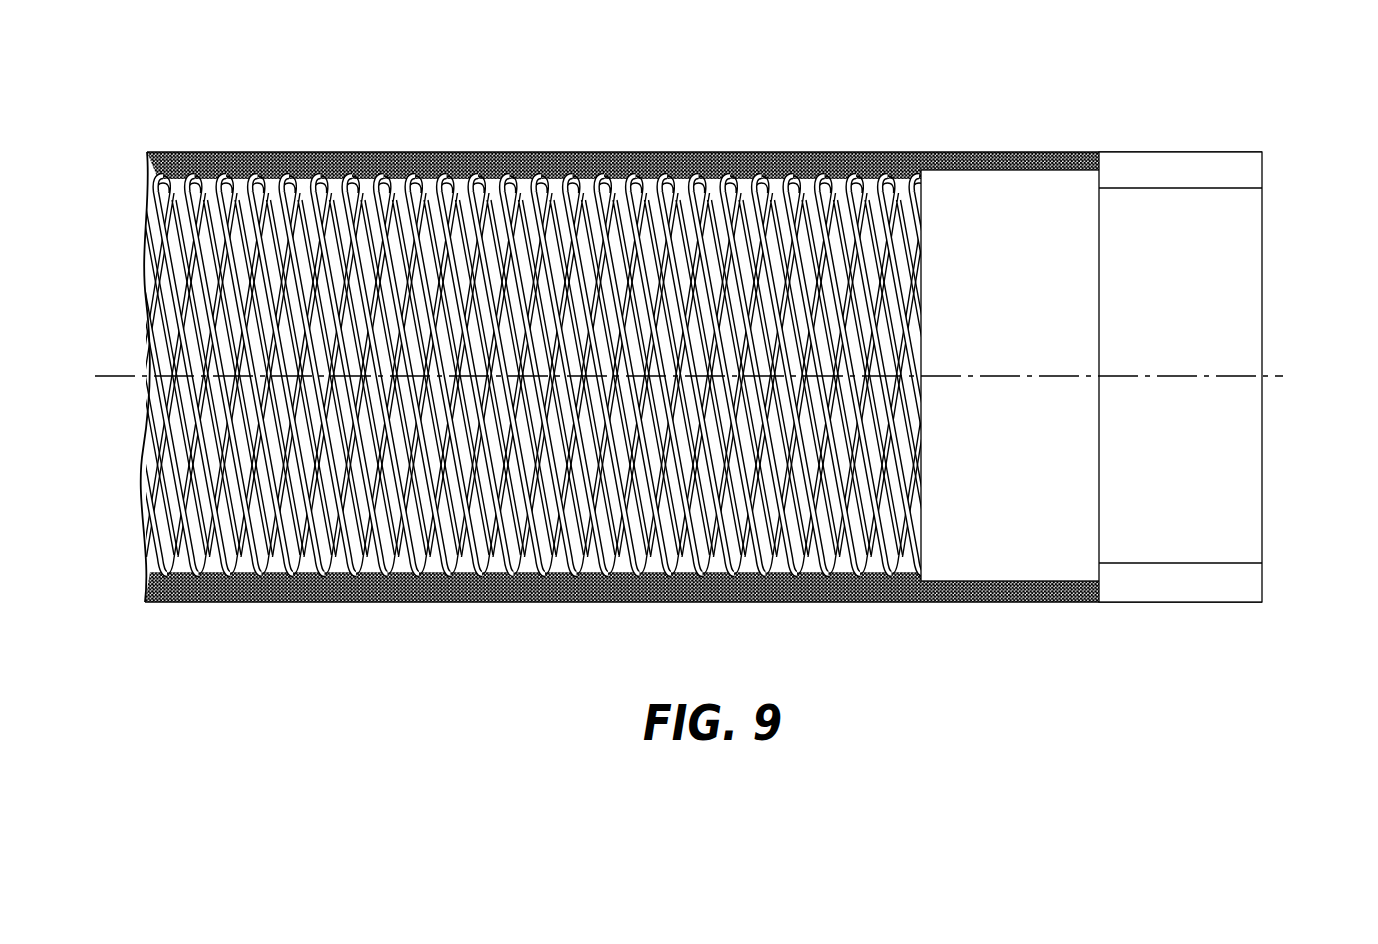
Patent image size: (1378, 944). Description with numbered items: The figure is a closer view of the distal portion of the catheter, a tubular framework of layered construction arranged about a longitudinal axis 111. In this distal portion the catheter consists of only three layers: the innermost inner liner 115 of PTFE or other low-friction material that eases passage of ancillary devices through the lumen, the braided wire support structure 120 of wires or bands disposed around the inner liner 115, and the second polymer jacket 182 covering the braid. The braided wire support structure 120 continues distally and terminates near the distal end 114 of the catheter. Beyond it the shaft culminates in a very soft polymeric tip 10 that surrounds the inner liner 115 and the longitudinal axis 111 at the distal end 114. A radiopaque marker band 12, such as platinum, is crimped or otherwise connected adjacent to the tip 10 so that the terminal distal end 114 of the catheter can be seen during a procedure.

The soft polymeric tip 10 is at (1177, 585).
The radiopaque marker band 12 is at (988, 196).
The longitudinal axis 111 is at (1232, 374).
The distal end 114 is at (1263, 150).
The inner liner 115 is at (338, 543).
The braided wire support structure 120 is at (663, 176).
The second polymer jacket 182 is at (463, 164).